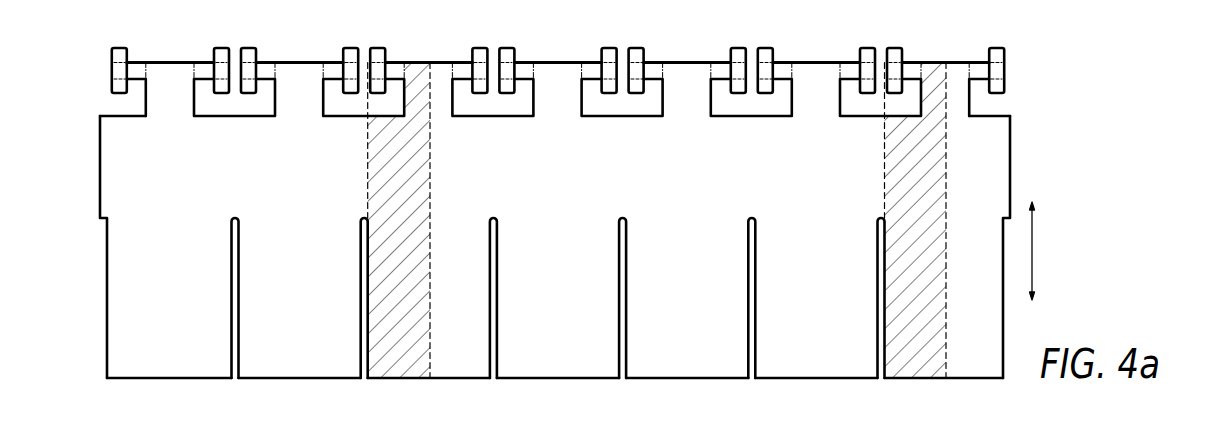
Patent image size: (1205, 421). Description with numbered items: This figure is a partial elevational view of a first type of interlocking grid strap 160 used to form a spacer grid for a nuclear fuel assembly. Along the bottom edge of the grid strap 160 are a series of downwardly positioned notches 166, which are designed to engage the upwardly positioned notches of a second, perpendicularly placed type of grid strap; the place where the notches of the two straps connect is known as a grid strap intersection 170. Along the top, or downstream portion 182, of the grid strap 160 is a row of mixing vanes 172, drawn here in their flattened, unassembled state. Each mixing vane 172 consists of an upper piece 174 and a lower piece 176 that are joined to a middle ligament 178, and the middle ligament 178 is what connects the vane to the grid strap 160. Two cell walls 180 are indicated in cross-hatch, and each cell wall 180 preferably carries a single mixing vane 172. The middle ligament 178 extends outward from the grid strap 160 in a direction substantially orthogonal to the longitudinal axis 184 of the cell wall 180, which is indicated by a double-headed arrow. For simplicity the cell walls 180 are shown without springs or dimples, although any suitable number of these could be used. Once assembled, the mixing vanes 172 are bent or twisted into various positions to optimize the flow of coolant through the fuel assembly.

The grid strap 160 is at (1021, 165).
The downwardly positioned notches 166 is at (362, 298).
The grid strap intersection 170 is at (494, 389).
The mixing vanes 172 is at (210, 52).
The upper piece 174 is at (600, 55).
The lower piece 176 is at (605, 88).
The middle ligament 178 is at (609, 72).
The cell wall 180 is at (420, 340).
The downstream portion 182 is at (958, 75).
The longitudinal axis 184 is at (1034, 257).